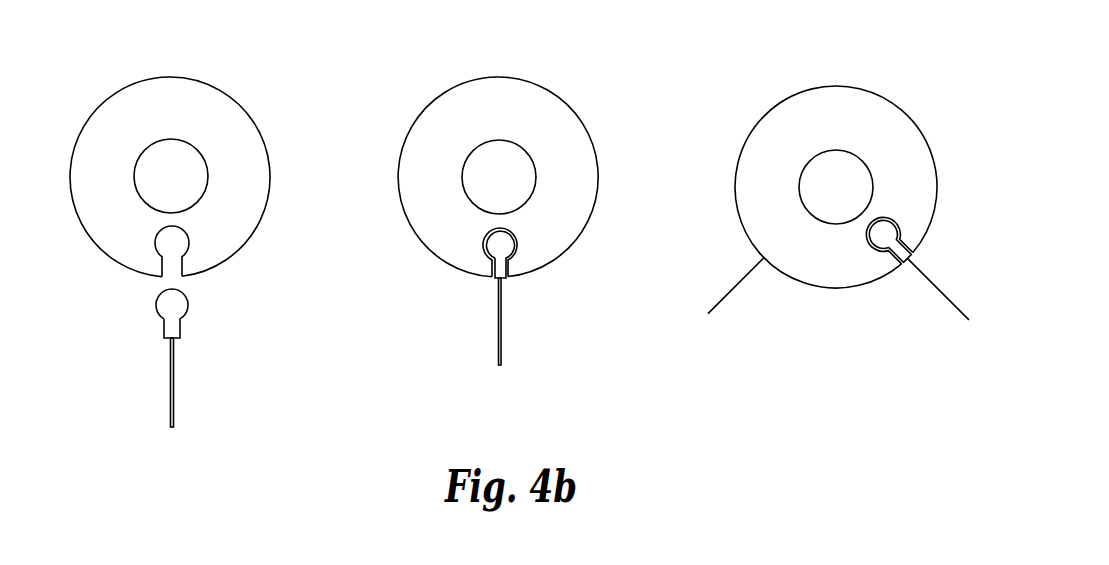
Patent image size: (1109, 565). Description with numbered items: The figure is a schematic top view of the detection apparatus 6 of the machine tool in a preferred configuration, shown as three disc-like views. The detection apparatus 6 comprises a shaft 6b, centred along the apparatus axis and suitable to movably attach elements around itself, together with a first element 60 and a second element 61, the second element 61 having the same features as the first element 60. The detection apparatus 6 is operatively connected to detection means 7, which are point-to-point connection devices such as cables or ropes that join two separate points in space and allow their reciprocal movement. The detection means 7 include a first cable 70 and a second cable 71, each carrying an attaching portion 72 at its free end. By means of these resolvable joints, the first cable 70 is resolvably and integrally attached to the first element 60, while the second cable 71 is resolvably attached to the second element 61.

The detection apparatus 6 is at (186, 145).
The first element 60 is at (250, 177).
The second element 61 is at (688, 186).
The shaft 6b is at (517, 191).
The detection means 7 is at (532, 304).
The first cable 70 is at (168, 370).
The second cable 71 is at (957, 311).
The attaching portion 72 is at (188, 300).